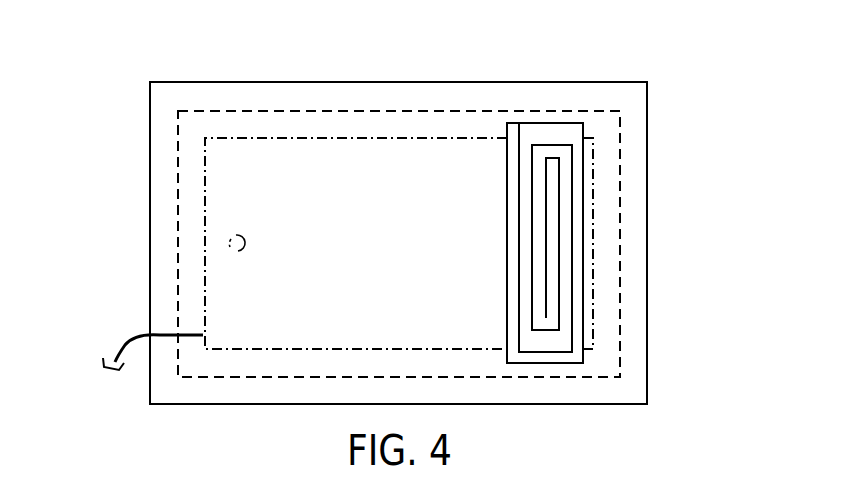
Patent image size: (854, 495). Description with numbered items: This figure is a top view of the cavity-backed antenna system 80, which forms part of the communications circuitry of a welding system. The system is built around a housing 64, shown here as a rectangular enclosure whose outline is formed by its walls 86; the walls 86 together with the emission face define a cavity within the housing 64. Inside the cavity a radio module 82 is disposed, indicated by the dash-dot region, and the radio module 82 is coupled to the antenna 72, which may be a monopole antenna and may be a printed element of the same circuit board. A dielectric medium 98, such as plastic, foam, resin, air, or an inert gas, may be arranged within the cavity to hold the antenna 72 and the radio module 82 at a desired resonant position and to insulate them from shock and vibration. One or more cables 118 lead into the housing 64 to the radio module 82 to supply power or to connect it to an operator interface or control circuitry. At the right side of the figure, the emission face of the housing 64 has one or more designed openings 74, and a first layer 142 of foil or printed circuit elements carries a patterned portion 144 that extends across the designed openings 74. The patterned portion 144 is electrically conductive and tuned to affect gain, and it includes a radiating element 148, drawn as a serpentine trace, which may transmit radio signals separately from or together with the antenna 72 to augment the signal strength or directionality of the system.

The cavity-backed antenna system 80 is at (148, 56).
The housing 64 is at (399, 81).
The first layer 142 is at (645, 243).
The walls 86 is at (262, 93).
The radio module 82 is at (345, 150).
The dielectric medium 98 is at (188, 198).
The antenna 72 is at (244, 249).
The cables 118 is at (131, 335).
The designed openings 74 is at (514, 184).
The patterned portion 144 is at (506, 241).
The radiating element 148 is at (519, 287).